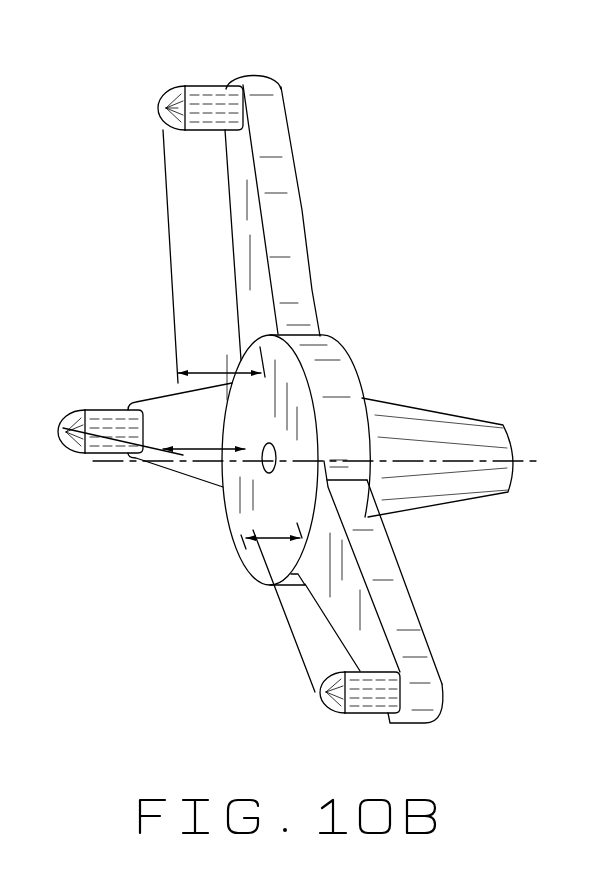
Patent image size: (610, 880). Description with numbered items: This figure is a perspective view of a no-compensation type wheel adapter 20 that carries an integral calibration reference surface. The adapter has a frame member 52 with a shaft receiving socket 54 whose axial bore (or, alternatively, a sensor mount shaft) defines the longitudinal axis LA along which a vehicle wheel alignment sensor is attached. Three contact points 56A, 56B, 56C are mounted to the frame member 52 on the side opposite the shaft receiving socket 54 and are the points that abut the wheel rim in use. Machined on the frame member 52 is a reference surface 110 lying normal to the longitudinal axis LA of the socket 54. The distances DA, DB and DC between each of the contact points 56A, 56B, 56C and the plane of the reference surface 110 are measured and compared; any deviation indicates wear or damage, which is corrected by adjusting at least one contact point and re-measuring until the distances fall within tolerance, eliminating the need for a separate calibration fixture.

The no-compensation type wheel adapter 20 is at (369, 352).
The frame member 52 is at (293, 273).
The shaft receiving socket 54 is at (266, 471).
The contact point 56A is at (320, 693).
The contact point 56B is at (64, 425).
The contact point 56C is at (160, 106).
The reference surface 110 is at (243, 542).